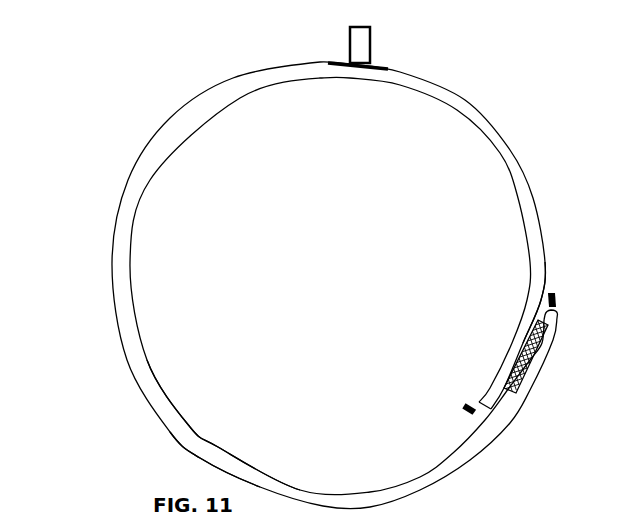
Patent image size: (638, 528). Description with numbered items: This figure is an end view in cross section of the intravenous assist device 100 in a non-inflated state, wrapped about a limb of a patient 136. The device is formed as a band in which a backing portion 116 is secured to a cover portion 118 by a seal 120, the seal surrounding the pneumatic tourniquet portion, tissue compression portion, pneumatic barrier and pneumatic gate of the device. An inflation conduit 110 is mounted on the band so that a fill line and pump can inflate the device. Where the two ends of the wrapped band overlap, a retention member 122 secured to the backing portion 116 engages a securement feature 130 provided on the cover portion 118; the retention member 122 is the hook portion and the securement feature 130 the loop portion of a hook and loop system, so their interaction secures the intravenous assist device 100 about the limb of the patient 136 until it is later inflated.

The intravenous assist device 100 is at (241, 66).
The inflation conduit 110 is at (371, 47).
The backing portion 116 is at (219, 444).
The cover portion 118 is at (199, 462).
The seal 120 is at (553, 293).
The retention member 122 is at (490, 410).
The securement feature 130 is at (545, 257).
The limb of a patient 136 is at (161, 362).